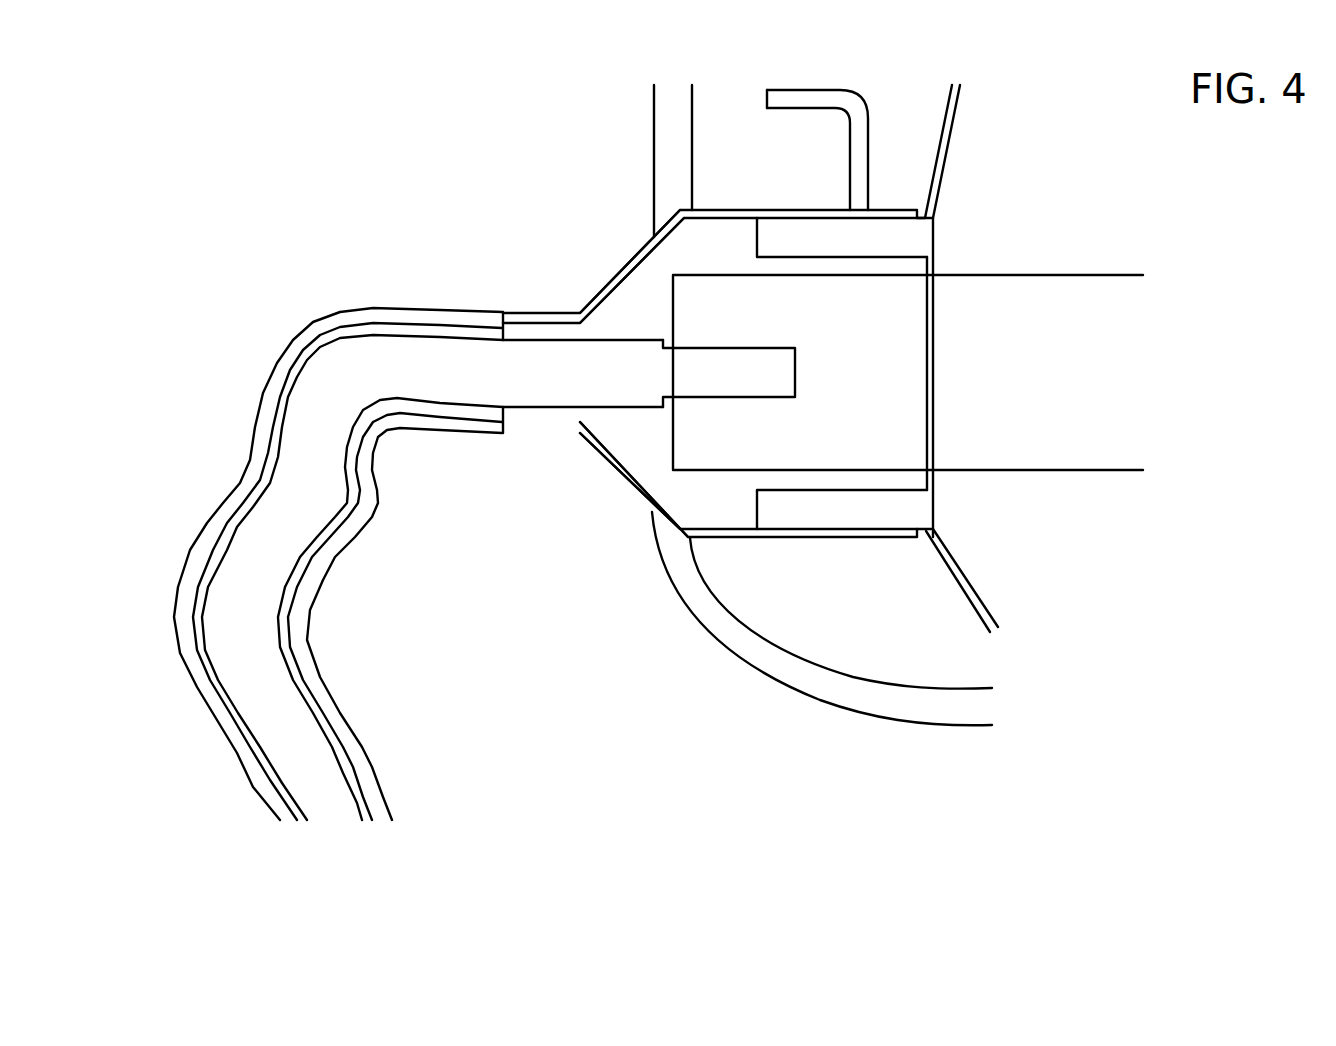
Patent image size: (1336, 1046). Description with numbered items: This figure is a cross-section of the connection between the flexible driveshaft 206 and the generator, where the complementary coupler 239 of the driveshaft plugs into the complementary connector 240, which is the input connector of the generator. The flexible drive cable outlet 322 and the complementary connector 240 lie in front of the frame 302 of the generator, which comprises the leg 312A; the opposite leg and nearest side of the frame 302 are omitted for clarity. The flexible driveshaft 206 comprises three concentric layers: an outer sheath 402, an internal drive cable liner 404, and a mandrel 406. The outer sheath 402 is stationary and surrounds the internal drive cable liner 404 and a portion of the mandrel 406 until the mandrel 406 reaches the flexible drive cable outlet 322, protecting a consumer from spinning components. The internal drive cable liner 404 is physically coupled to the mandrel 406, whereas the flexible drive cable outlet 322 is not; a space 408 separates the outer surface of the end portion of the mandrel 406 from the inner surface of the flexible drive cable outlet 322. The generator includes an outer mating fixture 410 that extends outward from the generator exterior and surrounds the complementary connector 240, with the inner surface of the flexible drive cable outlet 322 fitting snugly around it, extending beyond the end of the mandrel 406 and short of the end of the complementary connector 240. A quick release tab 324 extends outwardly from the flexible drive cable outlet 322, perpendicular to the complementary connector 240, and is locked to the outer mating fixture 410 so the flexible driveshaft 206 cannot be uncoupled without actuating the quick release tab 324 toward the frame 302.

The complementary coupler 239 is at (542, 183).
The frame 302 is at (654, 162).
The quick release tab 324 is at (865, 108).
The space 408 is at (635, 313).
The outer mating fixture 410 is at (870, 251).
The complementary connector 240 is at (872, 381).
The mandrel 406 is at (477, 383).
The internal drive cable liner 404 is at (423, 330).
The outer sheath 402 is at (353, 312).
The flexible driveshaft 206 is at (202, 372).
The flexible drive cable outlet 322 is at (615, 473).
The leg 312A is at (937, 727).